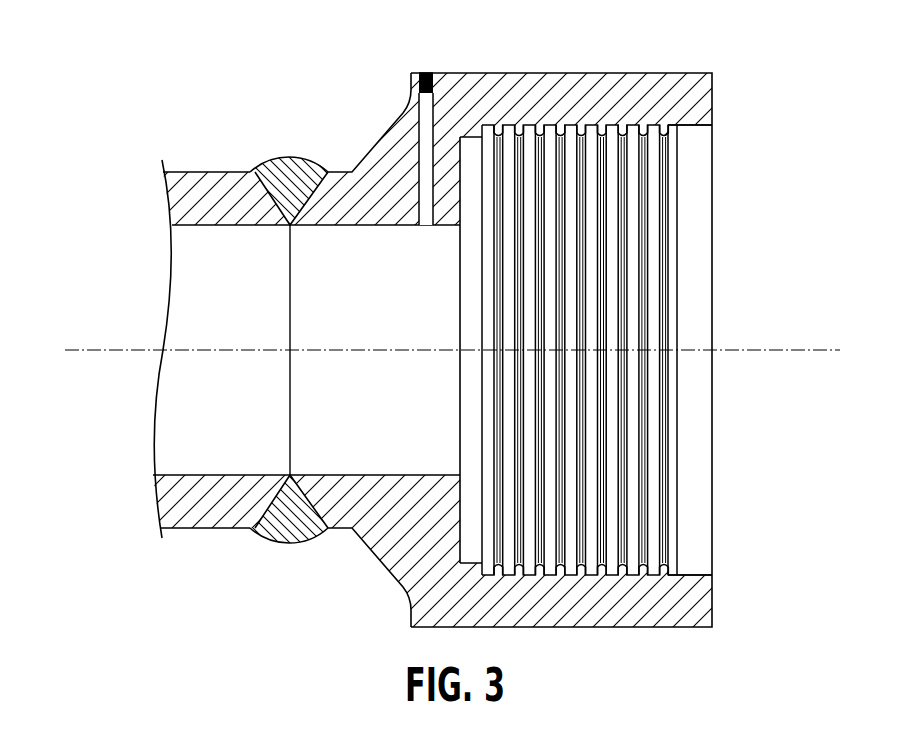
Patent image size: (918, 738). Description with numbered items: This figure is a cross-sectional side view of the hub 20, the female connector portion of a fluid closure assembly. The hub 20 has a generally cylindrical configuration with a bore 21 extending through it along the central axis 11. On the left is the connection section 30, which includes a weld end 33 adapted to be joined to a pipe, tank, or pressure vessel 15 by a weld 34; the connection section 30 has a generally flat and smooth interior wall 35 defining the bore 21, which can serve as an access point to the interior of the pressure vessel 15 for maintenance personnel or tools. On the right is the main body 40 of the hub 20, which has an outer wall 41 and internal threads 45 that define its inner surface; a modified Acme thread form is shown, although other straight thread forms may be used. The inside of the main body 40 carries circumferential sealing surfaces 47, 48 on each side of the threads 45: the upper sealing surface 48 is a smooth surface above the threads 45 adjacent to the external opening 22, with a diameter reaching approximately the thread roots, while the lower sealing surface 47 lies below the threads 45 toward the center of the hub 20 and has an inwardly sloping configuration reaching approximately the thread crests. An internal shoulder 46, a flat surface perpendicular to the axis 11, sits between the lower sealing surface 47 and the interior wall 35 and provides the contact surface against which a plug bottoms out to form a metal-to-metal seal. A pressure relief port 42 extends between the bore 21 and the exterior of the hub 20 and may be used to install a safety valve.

The central axis 11 is at (98, 350).
The pressure vessel 15 is at (208, 517).
The hub 20 is at (278, 74).
The bore 21 is at (335, 386).
The external opening 22 is at (750, 431).
The connection section 30 is at (378, 178).
The weld end 33 is at (298, 170).
The weld 34 is at (292, 530).
The interior wall 35 is at (330, 226).
The main body 40 is at (636, 84).
The outer wall 41 is at (692, 72).
The pressure relief port 42 is at (417, 93).
The internal threads 45 is at (578, 134).
The internal shoulder 46 is at (460, 512).
The lower sealing surface 47 is at (472, 129).
The upper sealing surface 48 is at (692, 127).